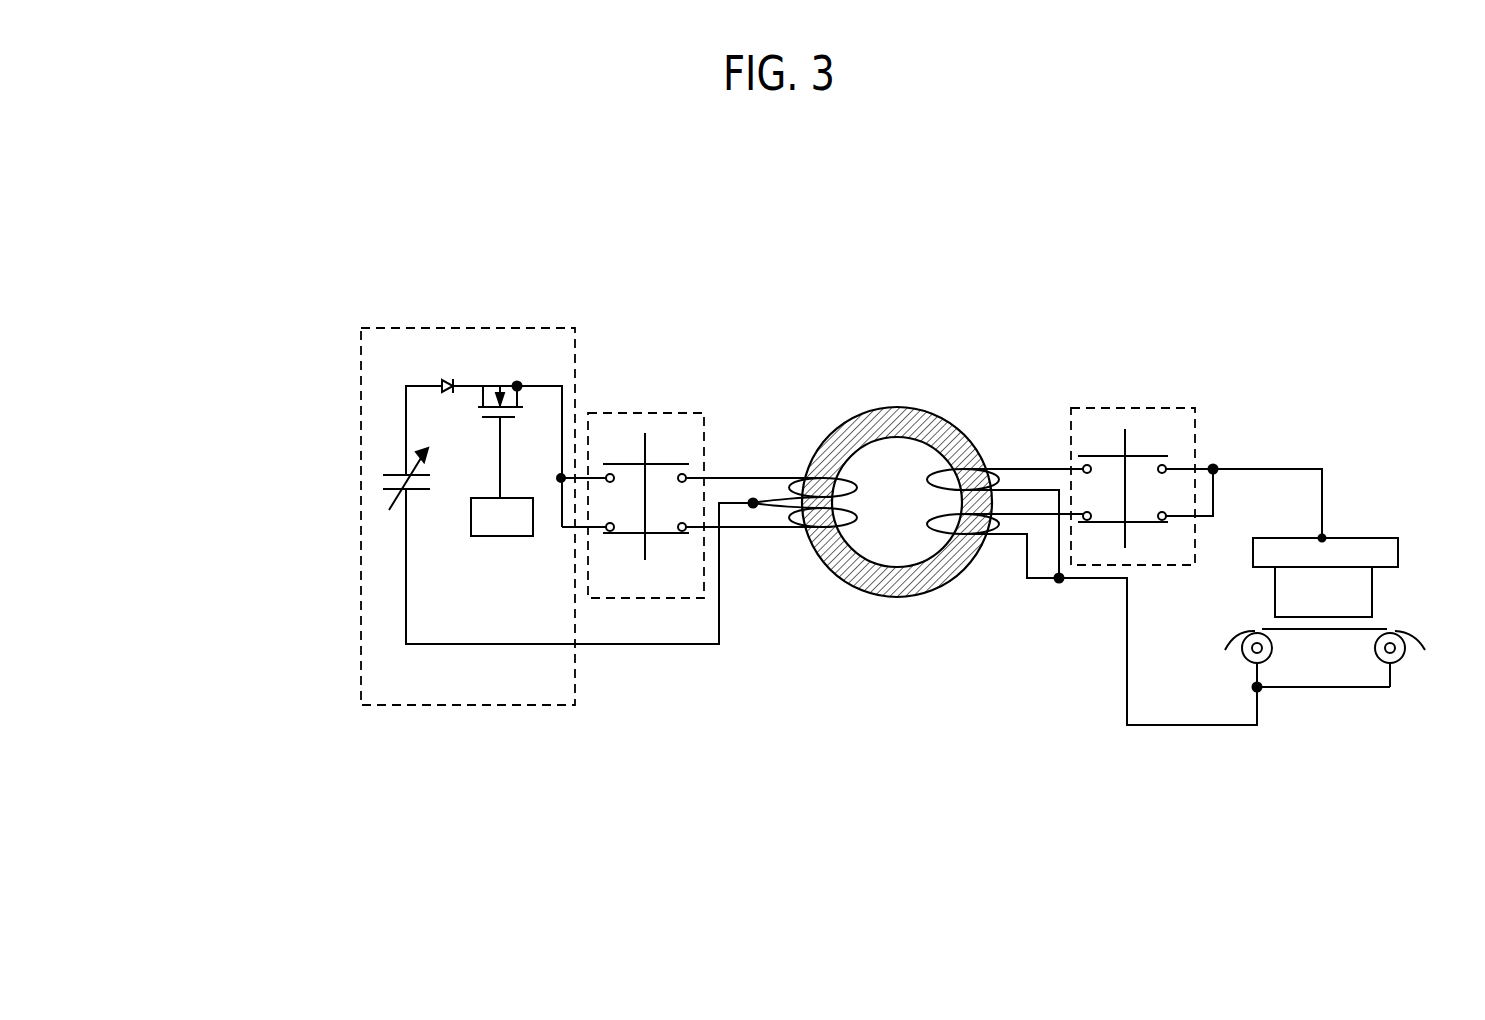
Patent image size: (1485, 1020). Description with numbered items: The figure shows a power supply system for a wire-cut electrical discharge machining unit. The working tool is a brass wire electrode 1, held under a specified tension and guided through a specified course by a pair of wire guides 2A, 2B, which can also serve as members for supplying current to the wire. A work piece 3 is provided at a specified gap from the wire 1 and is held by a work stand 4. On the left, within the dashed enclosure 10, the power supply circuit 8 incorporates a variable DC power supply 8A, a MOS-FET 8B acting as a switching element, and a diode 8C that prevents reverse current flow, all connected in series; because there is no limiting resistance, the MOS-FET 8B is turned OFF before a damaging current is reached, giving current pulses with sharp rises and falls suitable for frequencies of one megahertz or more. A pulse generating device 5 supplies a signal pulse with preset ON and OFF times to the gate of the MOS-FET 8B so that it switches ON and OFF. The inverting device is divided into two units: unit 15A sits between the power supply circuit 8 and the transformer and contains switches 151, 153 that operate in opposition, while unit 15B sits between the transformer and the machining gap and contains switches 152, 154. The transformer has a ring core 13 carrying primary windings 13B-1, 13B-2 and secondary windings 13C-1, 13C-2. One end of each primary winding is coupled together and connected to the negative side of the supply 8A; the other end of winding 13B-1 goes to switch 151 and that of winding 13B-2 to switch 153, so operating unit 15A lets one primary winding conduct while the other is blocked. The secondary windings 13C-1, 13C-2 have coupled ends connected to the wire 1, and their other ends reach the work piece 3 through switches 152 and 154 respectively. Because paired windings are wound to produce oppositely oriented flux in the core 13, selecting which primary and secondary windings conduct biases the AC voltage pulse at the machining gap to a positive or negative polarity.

The wire electrode 1 is at (1340, 630).
The wire guide 2A is at (1250, 657).
The wire guide 2B is at (1395, 657).
The work piece 3 is at (1365, 603).
The work stand 4 is at (1370, 548).
The pulse generating device 5 is at (332, 633).
The power supply circuit 8 is at (406, 412).
The variable DC power supply 8A is at (392, 487).
The field effect transistor (MOS-FET) 8B is at (527, 400).
The diode 8C is at (447, 373).
The pulse power source 10 is at (400, 322).
The ring core 13 is at (875, 413).
The primary winding 13B-1 is at (793, 480).
The primary winding 13B-2 is at (800, 525).
The secondary winding 13C-1 is at (1003, 473).
The secondary winding 13C-2 is at (1013, 527).
The unit of the inverting device 15A is at (615, 413).
The unit of the inverting device 15B is at (1103, 408).
The switch 151 is at (670, 464).
The switch 152 is at (1147, 456).
The switch 153 is at (655, 535).
The switch 154 is at (1140, 522).